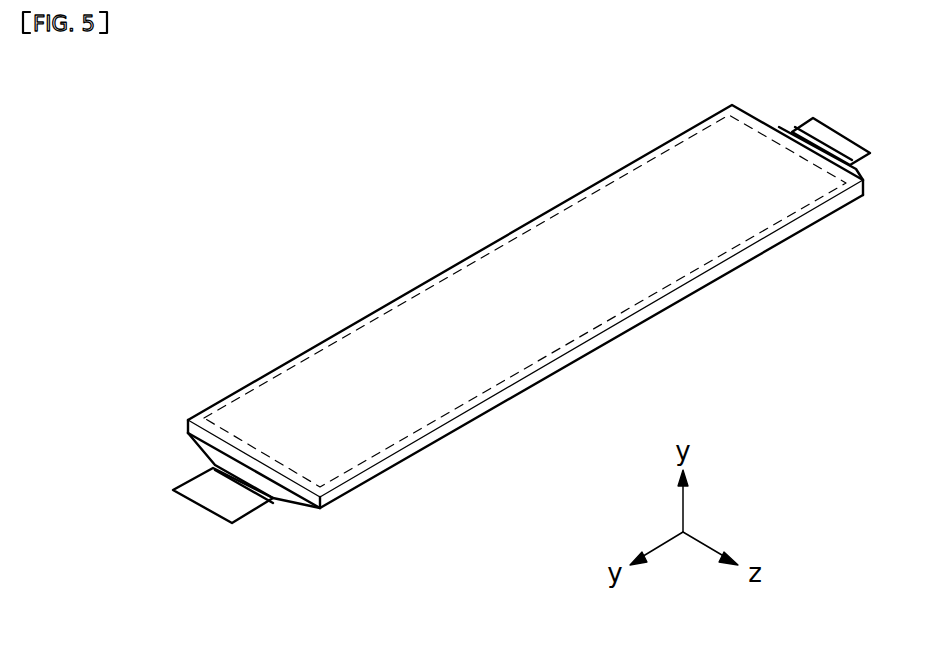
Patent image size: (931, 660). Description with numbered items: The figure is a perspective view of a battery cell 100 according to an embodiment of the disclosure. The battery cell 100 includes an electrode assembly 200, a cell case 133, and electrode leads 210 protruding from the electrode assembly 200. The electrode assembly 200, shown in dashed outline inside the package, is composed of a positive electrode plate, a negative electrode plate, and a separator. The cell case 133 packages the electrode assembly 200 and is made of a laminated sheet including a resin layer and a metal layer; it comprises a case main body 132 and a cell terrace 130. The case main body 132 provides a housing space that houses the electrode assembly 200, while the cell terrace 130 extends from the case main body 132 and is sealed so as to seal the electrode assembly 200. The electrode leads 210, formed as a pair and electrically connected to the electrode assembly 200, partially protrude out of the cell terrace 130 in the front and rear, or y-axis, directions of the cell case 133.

The battery cell 100 is at (423, 258).
The cell terrace 130 is at (291, 497).
The case main body 132 is at (380, 425).
The cell case 133 is at (405, 585).
The electrode assembly 200 is at (330, 348).
The electrode lead 210 is at (217, 498).